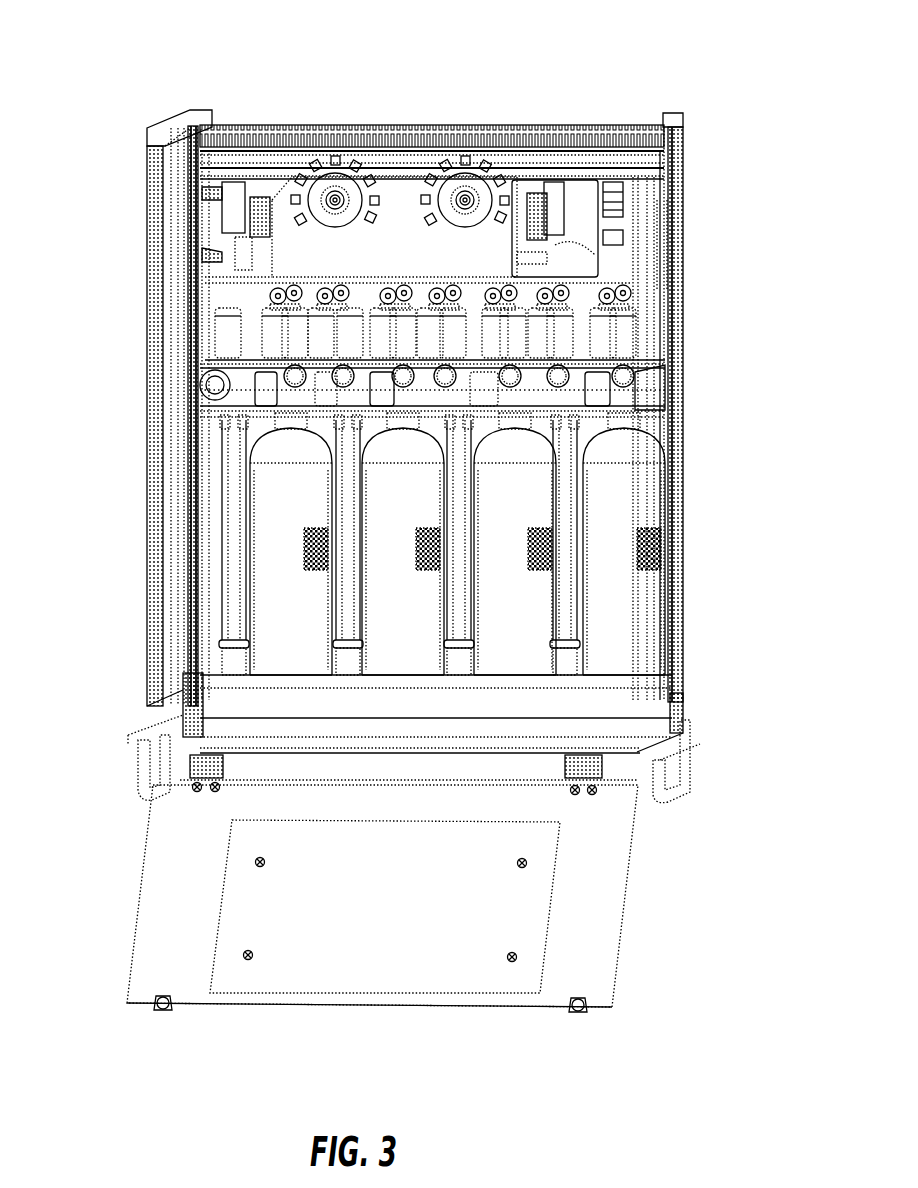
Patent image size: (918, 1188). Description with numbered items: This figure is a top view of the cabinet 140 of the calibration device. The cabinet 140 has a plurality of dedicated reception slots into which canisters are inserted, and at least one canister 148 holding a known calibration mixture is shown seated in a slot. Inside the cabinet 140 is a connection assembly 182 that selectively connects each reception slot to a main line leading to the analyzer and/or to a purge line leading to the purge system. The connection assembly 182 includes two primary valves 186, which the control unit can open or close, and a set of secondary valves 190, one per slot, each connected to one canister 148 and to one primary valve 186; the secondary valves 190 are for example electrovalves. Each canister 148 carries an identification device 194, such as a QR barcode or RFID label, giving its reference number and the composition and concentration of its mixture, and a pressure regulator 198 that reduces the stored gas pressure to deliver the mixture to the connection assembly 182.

The cabinet 140 is at (182, 104).
The canister 148 is at (645, 648).
The connection assembly 182 is at (624, 275).
The primary valve 186 is at (465, 186).
The secondary valve 190 is at (513, 340).
The identification device 194 is at (285, 558).
The pressure regulator 198 is at (638, 415).